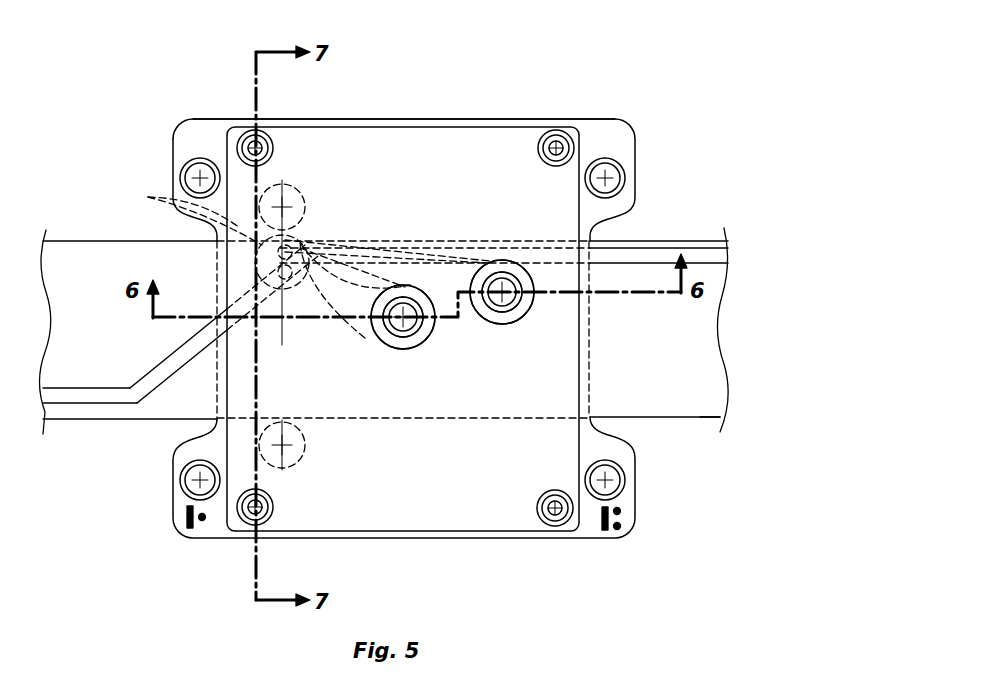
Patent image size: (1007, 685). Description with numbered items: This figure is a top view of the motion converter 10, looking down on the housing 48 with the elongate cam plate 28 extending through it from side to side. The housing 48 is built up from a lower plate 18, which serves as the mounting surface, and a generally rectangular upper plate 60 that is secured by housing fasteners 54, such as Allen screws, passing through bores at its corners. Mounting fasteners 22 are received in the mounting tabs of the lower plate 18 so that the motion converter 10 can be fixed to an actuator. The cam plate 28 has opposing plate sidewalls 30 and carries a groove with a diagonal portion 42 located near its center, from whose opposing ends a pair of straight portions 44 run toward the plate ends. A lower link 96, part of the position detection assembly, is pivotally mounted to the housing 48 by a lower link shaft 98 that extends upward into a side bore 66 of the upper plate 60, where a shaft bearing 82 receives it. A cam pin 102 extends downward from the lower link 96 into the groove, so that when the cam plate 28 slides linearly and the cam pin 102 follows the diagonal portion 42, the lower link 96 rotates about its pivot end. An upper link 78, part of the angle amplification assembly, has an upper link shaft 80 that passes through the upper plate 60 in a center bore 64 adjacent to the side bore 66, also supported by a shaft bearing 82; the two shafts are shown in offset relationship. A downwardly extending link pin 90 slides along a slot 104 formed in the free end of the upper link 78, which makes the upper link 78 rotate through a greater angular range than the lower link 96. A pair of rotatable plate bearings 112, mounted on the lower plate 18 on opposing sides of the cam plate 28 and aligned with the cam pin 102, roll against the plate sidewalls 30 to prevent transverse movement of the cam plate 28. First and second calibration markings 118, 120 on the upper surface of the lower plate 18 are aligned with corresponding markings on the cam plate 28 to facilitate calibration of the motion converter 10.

The motion converter 10 is at (686, 50).
The lower plate 18 is at (614, 119).
The mounting fasteners 22 is at (181, 178).
The cam plate 28 is at (685, 390).
The plate sidewalls 30 is at (88, 241).
The diagonal portion 42 is at (166, 372).
The straight portions 44 is at (76, 404).
The housing 48 is at (445, 126).
The housing fasteners 54 is at (252, 136).
The upper plate 60 is at (403, 329).
The center bore 64 is at (428, 335).
The side bore 66 is at (527, 305).
The upper link 78 is at (364, 340).
The upper link shaft 80 is at (400, 335).
The shaft bearing 82 is at (452, 304).
The link pin 90 is at (186, 214).
The lower link 96 is at (460, 242).
The lower link shaft 98 is at (496, 312).
The cam pin 102 is at (300, 318).
The slot 104 is at (375, 243).
The plate bearings 112 is at (302, 194).
The first calibration marking 118 is at (194, 532).
The second calibration marking 120 is at (615, 532).